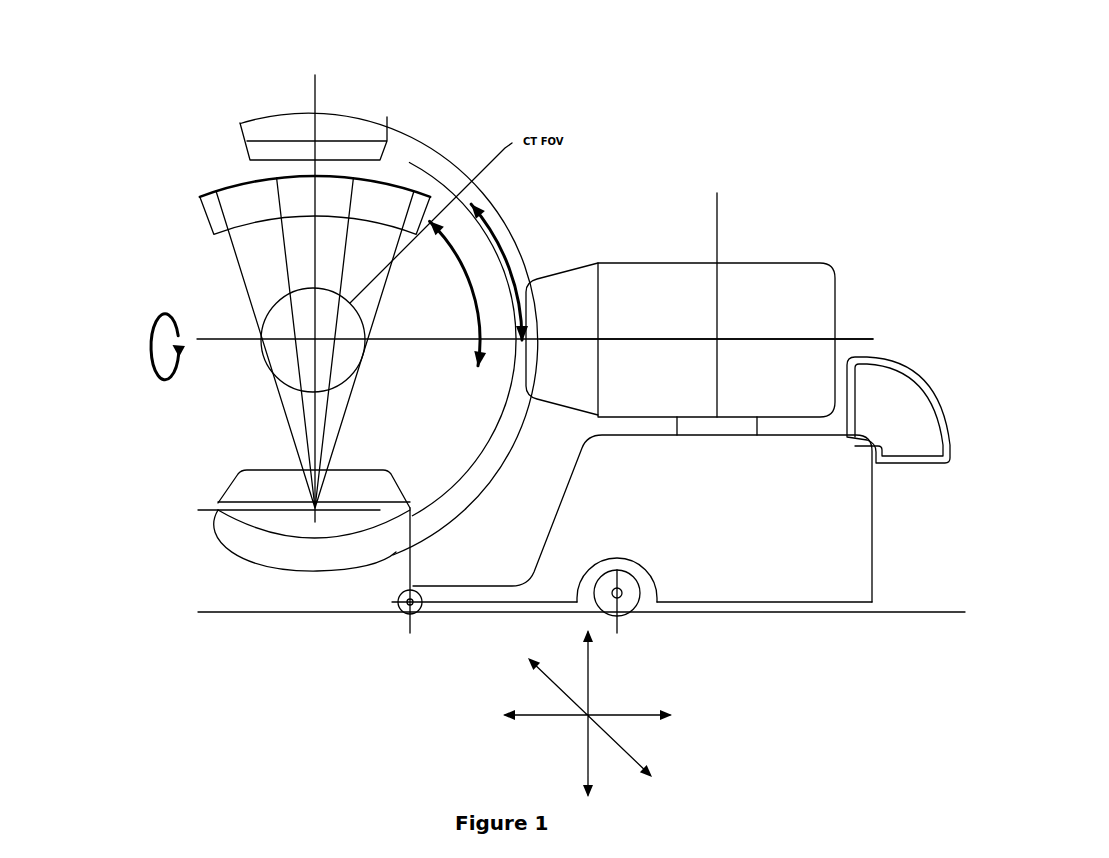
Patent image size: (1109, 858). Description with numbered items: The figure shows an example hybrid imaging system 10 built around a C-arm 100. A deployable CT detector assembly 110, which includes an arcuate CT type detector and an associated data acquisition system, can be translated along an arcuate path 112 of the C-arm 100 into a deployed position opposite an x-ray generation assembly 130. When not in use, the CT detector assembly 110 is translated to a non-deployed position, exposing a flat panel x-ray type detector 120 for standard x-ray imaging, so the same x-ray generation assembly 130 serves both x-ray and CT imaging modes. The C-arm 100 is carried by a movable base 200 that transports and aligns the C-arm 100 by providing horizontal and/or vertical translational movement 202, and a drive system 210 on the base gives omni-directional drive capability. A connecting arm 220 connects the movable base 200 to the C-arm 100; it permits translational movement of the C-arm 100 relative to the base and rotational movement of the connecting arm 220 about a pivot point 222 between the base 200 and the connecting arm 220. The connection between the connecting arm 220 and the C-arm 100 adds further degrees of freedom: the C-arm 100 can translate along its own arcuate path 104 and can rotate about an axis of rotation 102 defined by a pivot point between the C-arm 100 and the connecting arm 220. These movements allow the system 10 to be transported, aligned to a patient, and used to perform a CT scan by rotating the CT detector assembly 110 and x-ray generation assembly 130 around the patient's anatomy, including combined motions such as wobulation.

The hybrid imaging system 10 is at (683, 80).
The C-arm 100 is at (388, 334).
The axis of rotation 102 is at (139, 347).
The arcuate path 104 is at (503, 273).
The CT detector assembly 110 is at (203, 122).
The arcuate path 112 is at (458, 294).
The flat panel x-ray type detector 120 is at (356, 94).
The x-ray generation assembly 130 is at (383, 415).
The movable base 200 is at (581, 495).
The translational movement 202 is at (628, 713).
The drive system 210 is at (629, 603).
The connecting arm 220 is at (680, 349).
The pivot point 222 is at (706, 305).